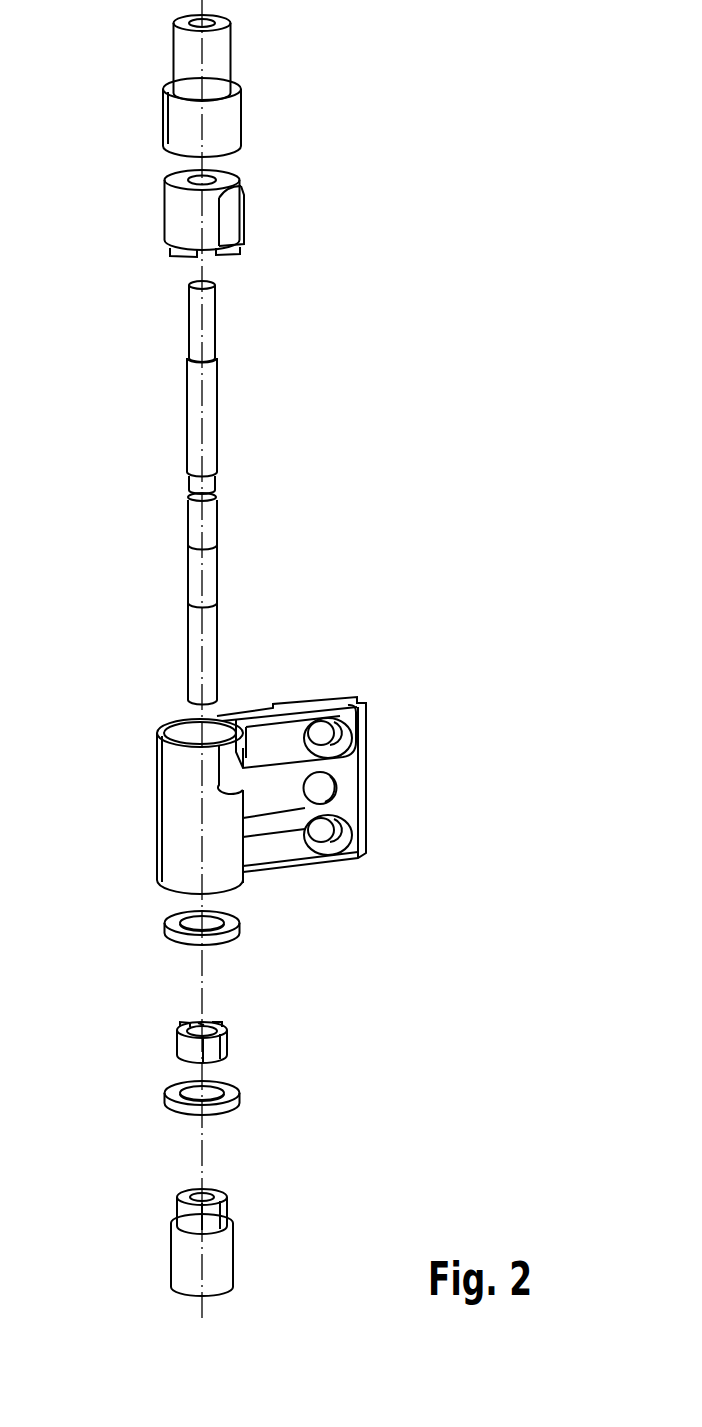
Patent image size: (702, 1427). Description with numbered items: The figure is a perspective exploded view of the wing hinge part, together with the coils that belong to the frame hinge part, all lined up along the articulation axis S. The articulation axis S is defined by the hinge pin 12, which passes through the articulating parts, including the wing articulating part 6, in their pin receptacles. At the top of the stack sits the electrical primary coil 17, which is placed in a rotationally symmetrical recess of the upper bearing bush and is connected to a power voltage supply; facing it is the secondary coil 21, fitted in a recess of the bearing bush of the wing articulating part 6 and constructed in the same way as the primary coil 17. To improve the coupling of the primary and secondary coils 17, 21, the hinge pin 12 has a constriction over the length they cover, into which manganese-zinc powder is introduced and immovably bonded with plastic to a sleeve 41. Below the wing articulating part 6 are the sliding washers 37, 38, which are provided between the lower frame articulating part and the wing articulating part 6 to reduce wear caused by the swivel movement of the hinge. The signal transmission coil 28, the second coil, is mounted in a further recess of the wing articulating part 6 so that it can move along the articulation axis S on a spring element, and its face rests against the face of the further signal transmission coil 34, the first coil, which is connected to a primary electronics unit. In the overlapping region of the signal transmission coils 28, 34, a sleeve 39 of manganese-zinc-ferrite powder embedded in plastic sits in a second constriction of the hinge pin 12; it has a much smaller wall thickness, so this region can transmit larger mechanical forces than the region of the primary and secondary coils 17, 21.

The primary coil 17 is at (232, 122).
The secondary coil 21 is at (232, 221).
The hinge pin 12 is at (208, 321).
The sleeve 41 is at (208, 411).
The sleeve 39 is at (208, 575).
The wing articulating part 6 is at (128, 849).
The sliding washer 37 is at (228, 923).
The signal transmission coil 28 is at (228, 1047).
The sliding washer 38 is at (228, 1095).
The articulation axis S is at (202, 1156).
The signal transmission coil 34 is at (232, 1216).